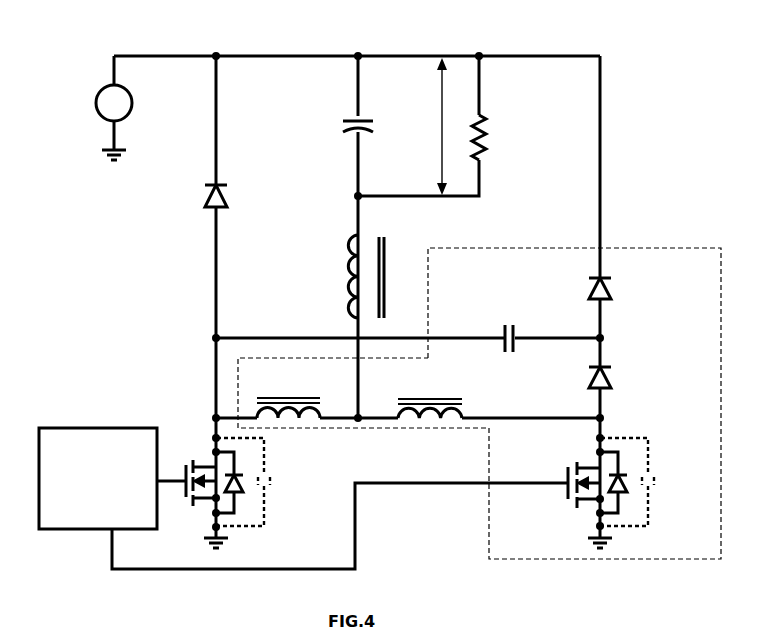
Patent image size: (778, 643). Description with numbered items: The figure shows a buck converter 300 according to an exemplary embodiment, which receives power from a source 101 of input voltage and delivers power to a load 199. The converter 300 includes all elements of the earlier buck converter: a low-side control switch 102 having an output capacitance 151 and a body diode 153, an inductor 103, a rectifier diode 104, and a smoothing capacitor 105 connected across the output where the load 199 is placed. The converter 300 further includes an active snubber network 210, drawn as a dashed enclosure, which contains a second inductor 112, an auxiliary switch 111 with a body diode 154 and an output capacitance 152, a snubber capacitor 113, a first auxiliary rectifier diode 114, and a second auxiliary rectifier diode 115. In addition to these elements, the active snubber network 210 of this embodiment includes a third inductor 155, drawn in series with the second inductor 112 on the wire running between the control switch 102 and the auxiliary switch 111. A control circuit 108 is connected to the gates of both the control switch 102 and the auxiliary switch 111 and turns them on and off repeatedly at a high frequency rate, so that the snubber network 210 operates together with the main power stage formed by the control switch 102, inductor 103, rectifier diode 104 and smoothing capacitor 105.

The buck converter 300 is at (357, 28).
The source 101 is at (133, 103).
The rectifier diode 104 is at (205, 196).
The smoothing capacitor 105 is at (342, 124).
The load 199 is at (492, 112).
The inductor 103 is at (352, 278).
The snubber capacitor 113 is at (503, 337).
The second auxiliary rectifier diode 115 is at (612, 290).
The first auxiliary rectifier diode 114 is at (612, 379).
The active snubber network 210 is at (636, 247).
The third inductor 155 is at (285, 395).
The second inductor 112 is at (425, 395).
The control circuit 108 is at (90, 427).
The control switch 102 is at (198, 447).
The output capacitance 151 is at (276, 473).
The body diode 153 is at (246, 492).
The auxiliary switch 111 is at (560, 473).
The output capacitance 152 is at (656, 473).
The body diode 154 is at (628, 492).